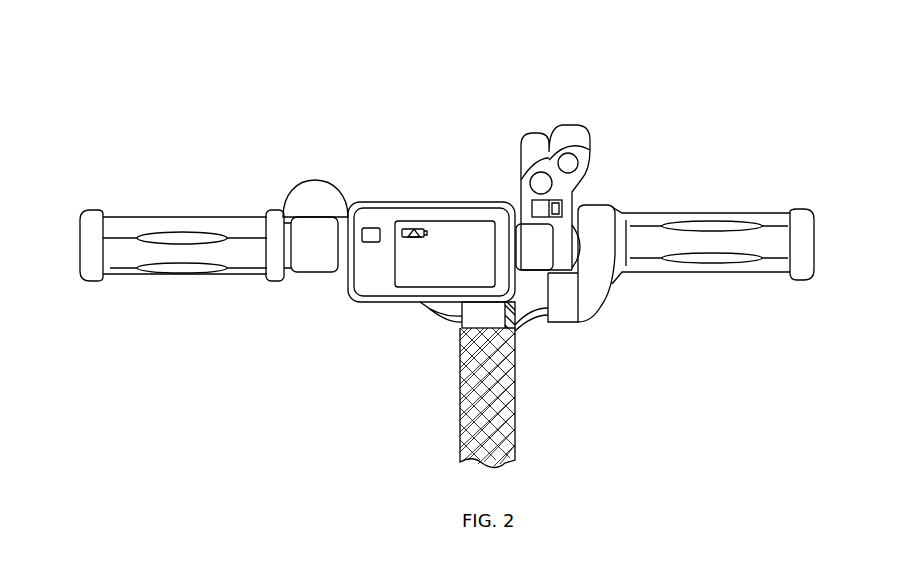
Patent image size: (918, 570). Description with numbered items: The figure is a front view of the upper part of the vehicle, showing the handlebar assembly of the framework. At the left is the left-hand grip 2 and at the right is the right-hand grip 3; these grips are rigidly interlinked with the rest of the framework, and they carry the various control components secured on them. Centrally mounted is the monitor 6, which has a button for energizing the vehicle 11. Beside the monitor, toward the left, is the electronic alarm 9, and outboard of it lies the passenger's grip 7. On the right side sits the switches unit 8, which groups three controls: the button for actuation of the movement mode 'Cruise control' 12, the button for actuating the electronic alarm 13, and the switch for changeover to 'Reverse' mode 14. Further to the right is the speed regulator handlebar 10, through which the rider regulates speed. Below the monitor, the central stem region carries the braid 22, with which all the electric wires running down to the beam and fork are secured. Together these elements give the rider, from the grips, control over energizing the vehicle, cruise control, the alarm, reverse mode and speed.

The left-hand grip 2 is at (274, 232).
The right-hand grip 3 is at (538, 238).
The monitor 6 is at (423, 202).
The passenger's grip 7 is at (207, 218).
The switches unit 8 is at (565, 150).
The electronic alarm 9 is at (299, 205).
The speed regulator handlebar 10 is at (643, 216).
The button for energizing the vehicle 11 is at (368, 226).
The button for actuation of the movement mode 'Cruise control' 12 is at (586, 140).
The button for actuating the electronic alarm 13 is at (541, 180).
The switch for changeover to 'Reverse' mode 14 is at (560, 207).
The braid 22 is at (463, 458).